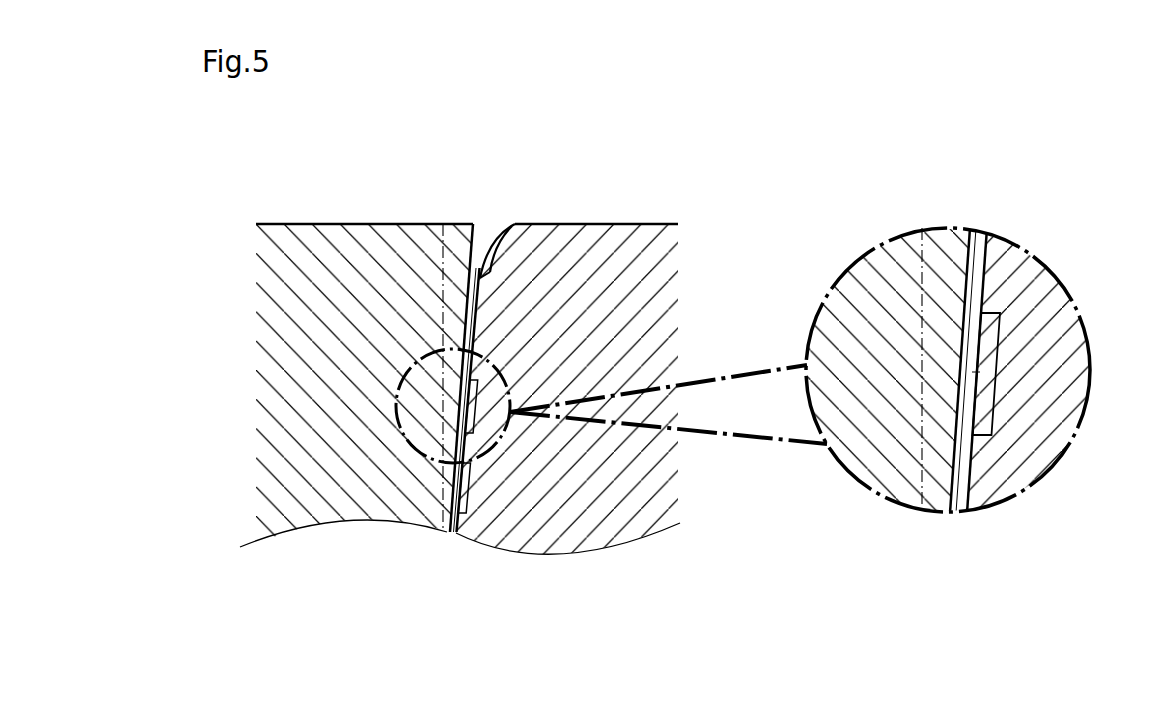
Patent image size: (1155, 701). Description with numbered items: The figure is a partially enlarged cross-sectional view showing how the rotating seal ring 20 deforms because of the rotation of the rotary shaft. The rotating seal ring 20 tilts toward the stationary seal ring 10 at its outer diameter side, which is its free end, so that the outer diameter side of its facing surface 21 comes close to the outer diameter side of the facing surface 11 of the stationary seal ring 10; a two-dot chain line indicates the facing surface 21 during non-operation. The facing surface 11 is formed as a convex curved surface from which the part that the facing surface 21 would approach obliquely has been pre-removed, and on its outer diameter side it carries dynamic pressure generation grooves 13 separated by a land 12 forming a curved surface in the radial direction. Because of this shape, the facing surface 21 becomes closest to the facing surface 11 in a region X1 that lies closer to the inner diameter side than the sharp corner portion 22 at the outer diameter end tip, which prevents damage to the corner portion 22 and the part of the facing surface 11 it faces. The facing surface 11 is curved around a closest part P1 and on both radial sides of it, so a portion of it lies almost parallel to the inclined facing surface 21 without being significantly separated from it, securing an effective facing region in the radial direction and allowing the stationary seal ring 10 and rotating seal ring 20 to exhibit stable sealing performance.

The stationary seal ring 10 is at (632, 243).
The facing surface 11 is at (478, 266).
The land 12 is at (442, 351).
The dynamic pressure generation groove 13 is at (463, 398).
The rotating seal ring 20 is at (352, 242).
The facing surface 21 is at (478, 333).
The corner portion 22 is at (476, 262).
The closest part P1 is at (976, 375).
The region X1 is at (507, 432).